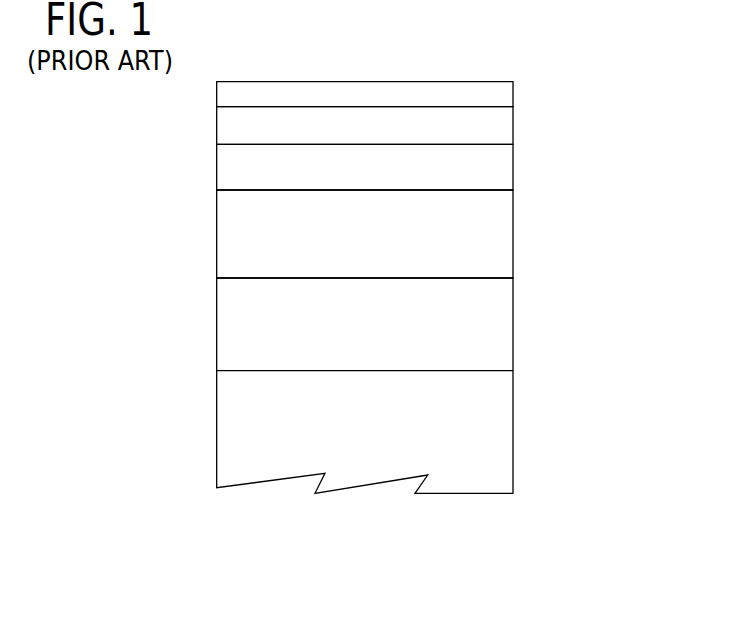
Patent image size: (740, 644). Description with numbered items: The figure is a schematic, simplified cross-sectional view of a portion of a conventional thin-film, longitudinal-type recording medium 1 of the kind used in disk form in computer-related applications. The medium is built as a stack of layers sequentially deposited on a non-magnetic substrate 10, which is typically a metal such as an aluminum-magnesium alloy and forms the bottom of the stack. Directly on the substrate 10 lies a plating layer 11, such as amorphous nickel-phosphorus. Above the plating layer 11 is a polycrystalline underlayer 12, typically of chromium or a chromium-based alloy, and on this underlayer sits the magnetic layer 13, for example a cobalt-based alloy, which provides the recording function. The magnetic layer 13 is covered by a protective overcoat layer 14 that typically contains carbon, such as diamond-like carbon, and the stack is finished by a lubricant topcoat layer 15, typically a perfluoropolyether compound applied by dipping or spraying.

The recording medium 1 is at (612, 126).
The non-magnetic substrate 10 is at (513, 433).
The plating layer 11 is at (513, 332).
The polycrystalline underlayer 12 is at (513, 235).
The magnetic layer 13 is at (513, 169).
The protective overcoat layer 14 is at (513, 129).
The lubricant topcoat layer 15 is at (513, 93).